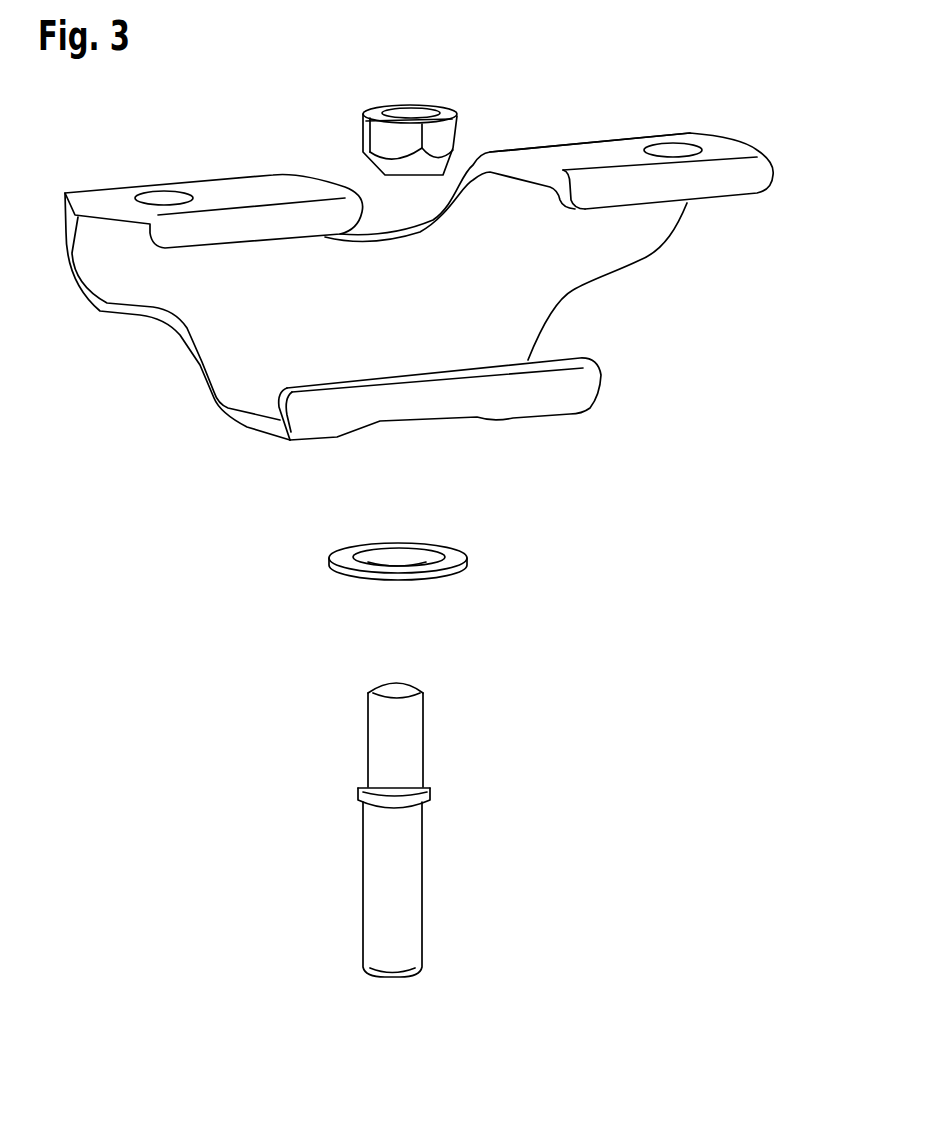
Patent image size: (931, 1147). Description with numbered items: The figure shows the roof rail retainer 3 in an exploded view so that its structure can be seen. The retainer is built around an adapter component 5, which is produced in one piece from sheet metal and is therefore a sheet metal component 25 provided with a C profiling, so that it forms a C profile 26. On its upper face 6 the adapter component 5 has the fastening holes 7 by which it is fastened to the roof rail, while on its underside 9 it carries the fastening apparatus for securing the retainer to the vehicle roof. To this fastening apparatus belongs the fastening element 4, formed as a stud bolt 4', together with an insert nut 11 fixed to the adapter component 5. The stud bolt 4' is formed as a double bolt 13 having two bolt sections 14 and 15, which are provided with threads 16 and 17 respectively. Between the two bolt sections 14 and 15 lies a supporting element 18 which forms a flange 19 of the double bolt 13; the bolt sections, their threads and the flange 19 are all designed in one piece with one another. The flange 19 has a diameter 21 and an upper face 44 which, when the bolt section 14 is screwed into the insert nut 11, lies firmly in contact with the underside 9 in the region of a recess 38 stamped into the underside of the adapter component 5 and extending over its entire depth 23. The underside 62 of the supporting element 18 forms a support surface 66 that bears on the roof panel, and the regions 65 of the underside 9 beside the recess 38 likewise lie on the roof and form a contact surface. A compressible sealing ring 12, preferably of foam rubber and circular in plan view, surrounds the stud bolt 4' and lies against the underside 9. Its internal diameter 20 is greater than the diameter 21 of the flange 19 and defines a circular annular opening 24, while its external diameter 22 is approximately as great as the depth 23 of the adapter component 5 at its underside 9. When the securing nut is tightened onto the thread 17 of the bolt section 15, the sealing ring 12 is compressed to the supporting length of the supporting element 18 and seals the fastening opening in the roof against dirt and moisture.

The roof rail retainer 3 is at (425, 348).
The fastening element 4 is at (411, 828).
The stud bolt 4' is at (411, 828).
The double bolt 13 is at (411, 828).
The adapter component 5 is at (425, 348).
The sheet metal component 25 is at (425, 348).
The C profile 26 is at (425, 348).
The upper face 6 is at (257, 187).
The fastening holes 7 is at (165, 198).
The underside 9 is at (223, 515).
The insert nut 11 is at (437, 135).
The sealing ring 12 is at (433, 528).
The bolt section 14 is at (408, 715).
The bolt section 15 is at (372, 899).
The thread 16 is at (377, 735).
The thread 17 is at (407, 889).
The supporting element 18 is at (406, 809).
The flange 19 is at (406, 809).
The internal diameter 20 is at (445, 553).
The diameter 21 is at (393, 767).
The external diameter 22 is at (471, 553).
The depth 23 is at (218, 425).
The annular opening 24 is at (402, 557).
The recess 38 is at (451, 442).
The upper face 44 is at (358, 760).
The underside 62 is at (406, 809).
The support surface 66 is at (420, 795).
The regions 65 is at (462, 427).